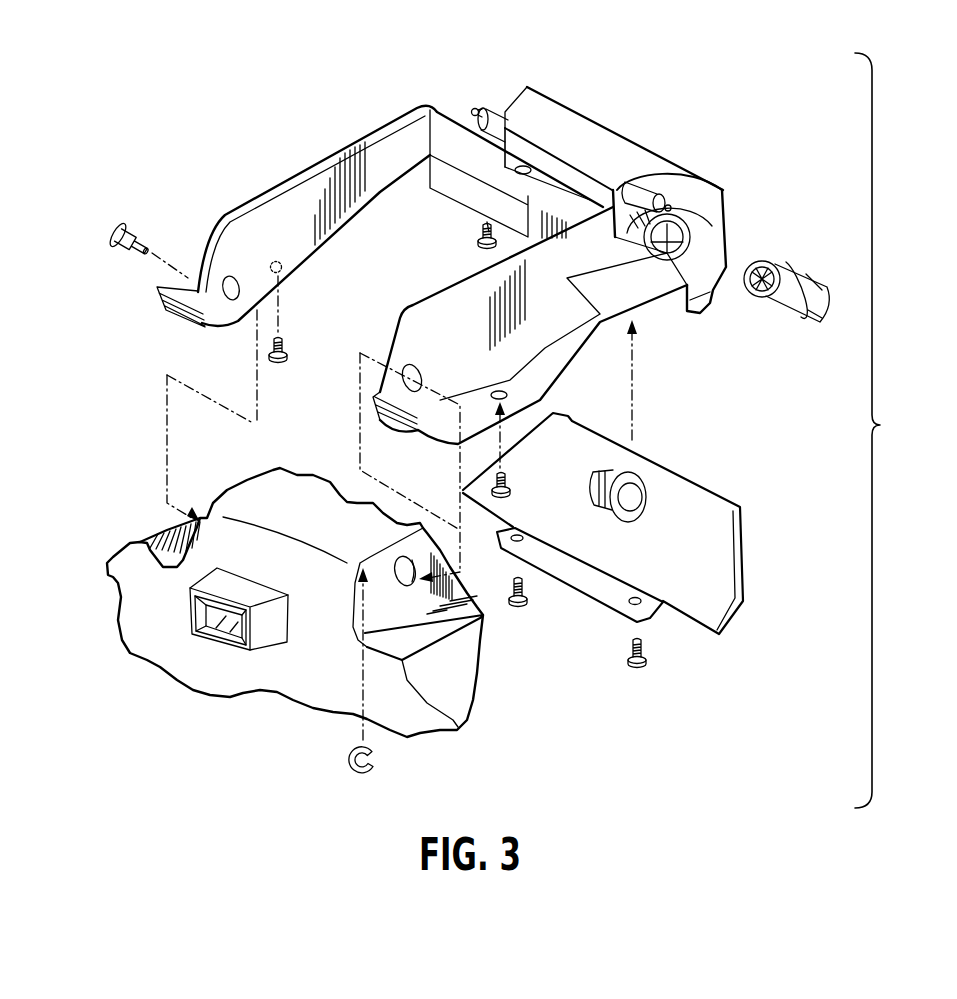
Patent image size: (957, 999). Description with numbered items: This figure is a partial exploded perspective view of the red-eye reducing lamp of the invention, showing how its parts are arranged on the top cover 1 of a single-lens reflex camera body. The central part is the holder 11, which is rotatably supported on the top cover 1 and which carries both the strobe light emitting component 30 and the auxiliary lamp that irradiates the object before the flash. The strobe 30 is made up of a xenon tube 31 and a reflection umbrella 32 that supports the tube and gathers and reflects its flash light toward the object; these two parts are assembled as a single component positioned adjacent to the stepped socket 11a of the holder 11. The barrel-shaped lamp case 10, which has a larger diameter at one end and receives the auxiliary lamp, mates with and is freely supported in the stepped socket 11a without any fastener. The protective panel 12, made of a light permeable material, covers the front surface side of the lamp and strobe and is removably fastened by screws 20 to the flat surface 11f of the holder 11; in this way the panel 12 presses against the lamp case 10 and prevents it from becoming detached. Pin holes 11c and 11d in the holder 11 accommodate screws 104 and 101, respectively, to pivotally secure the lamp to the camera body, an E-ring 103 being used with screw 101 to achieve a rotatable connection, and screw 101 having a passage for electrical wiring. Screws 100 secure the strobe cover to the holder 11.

The top cover 1 is at (247, 500).
The lamp case 10 is at (815, 293).
The holder 11 is at (473, 291).
The stepped socket 11a is at (676, 226).
The pin hole 11c is at (231, 300).
The pin hole 11d is at (421, 392).
The flat surface 11f is at (703, 312).
The protective panel 12 is at (683, 480).
The screw 20 is at (521, 605).
The strobe light emitting component 30 is at (598, 103).
The xenon tube 31 is at (495, 110).
The reflection umbrella 32 is at (612, 141).
The screw 100 is at (285, 360).
The screw 101 is at (647, 497).
The E-ring 103 is at (378, 760).
The screw 104 is at (112, 236).